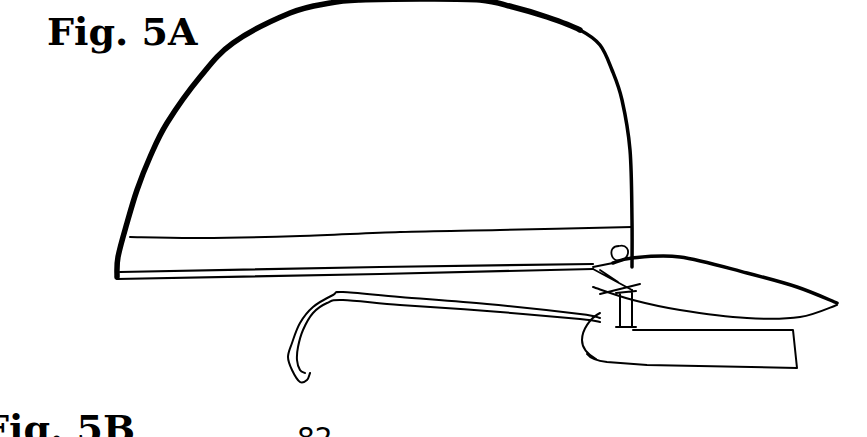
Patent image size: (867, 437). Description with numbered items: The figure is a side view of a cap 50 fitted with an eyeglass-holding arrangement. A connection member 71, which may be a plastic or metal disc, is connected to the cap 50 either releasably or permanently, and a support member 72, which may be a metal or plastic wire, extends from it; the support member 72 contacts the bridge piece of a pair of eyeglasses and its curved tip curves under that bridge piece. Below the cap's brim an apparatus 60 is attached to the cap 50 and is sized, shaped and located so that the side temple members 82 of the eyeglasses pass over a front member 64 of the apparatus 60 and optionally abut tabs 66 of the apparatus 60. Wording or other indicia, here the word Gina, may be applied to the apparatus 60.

The cap 50 is at (660, 101).
The connection member 71 is at (613, 246).
The tabs 66 is at (597, 298).
The support member 72 is at (583, 340).
The side temple members 82 is at (487, 307).
The apparatus 60 is at (667, 380).
The front member 64 is at (793, 357).